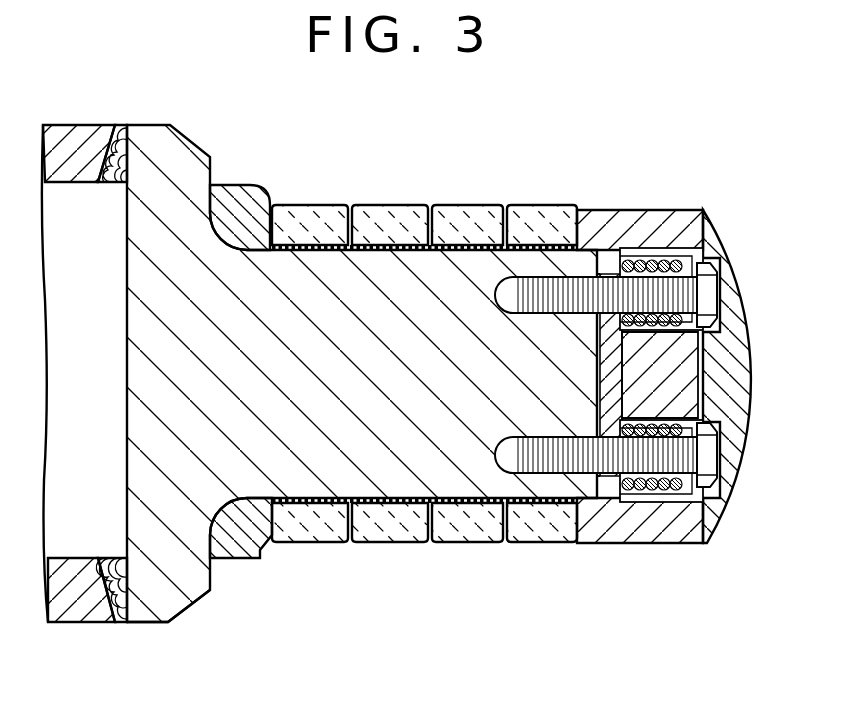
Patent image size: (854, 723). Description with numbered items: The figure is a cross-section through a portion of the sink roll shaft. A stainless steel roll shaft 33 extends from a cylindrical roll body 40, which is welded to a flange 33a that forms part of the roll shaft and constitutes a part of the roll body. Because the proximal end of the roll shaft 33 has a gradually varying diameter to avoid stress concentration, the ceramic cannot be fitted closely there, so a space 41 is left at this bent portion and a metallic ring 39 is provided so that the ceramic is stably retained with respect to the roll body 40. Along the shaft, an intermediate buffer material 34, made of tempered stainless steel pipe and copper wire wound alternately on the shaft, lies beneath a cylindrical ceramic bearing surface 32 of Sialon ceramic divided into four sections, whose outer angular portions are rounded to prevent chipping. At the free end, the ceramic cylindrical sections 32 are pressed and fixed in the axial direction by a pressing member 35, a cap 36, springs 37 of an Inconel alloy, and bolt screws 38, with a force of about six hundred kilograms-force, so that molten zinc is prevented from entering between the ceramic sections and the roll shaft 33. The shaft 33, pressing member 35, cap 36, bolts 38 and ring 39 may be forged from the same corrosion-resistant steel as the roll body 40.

The roll shaft 33 is at (307, 257).
The flange 33a is at (158, 608).
The roll body 40 is at (72, 125).
The metallic ring 39 is at (236, 185).
The space 41 is at (236, 505).
The cylindrical ceramic bearing surface sections 32 is at (462, 205).
The intermediate buffer material 34 is at (466, 505).
The pressing member 35 is at (628, 210).
The cap 36 is at (738, 490).
The springs 37 is at (650, 475).
The bolt screws 38 is at (708, 292).